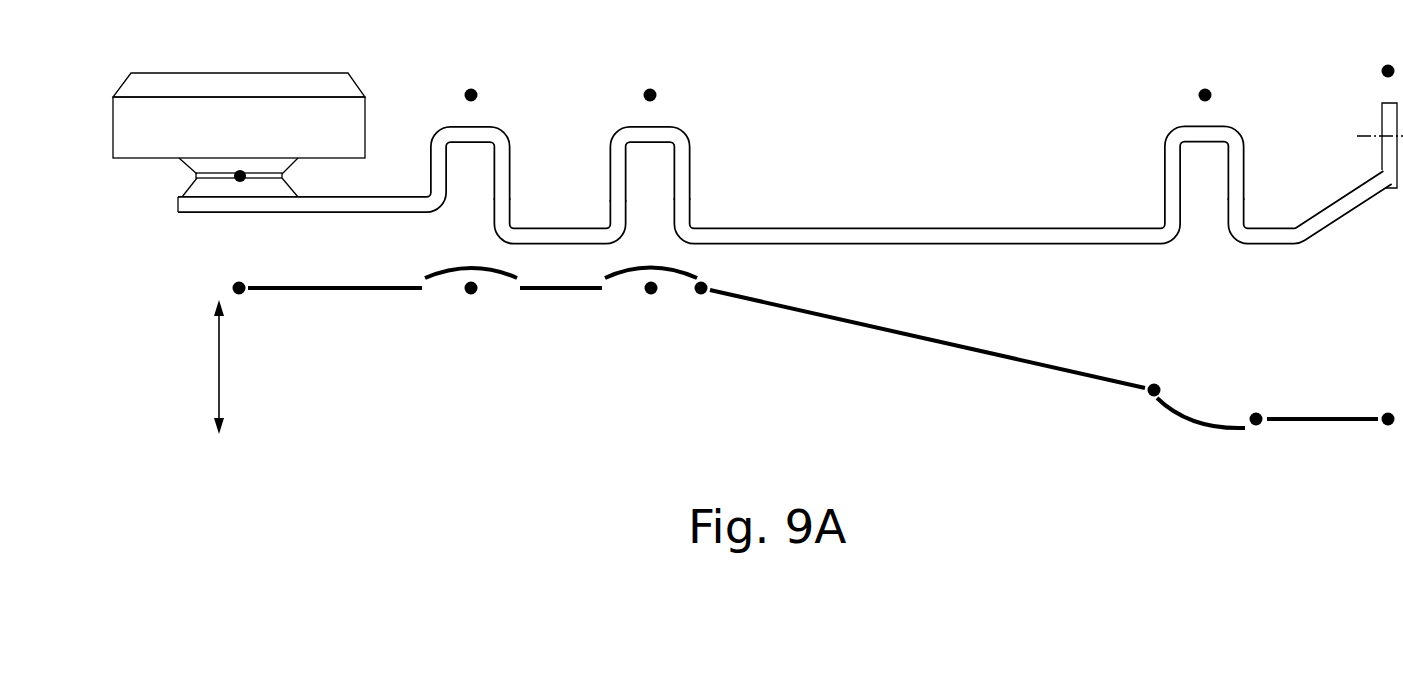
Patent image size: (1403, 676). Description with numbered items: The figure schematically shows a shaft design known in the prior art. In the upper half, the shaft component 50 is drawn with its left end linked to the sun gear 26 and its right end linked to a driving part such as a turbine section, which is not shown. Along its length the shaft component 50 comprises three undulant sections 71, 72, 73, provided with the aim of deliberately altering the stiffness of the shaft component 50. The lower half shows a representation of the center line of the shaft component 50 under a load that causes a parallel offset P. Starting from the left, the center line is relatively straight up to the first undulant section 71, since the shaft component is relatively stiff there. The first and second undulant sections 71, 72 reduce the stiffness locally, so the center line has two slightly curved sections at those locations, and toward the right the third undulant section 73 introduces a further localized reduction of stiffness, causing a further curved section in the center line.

The sun gear 26 is at (166, 180).
The shaft component 50 is at (790, 148).
The first undulant section 71 is at (503, 142).
The second undulant section 72 is at (681, 142).
The third undulant section 73 is at (1235, 142).
The parallel offset P is at (219, 358).